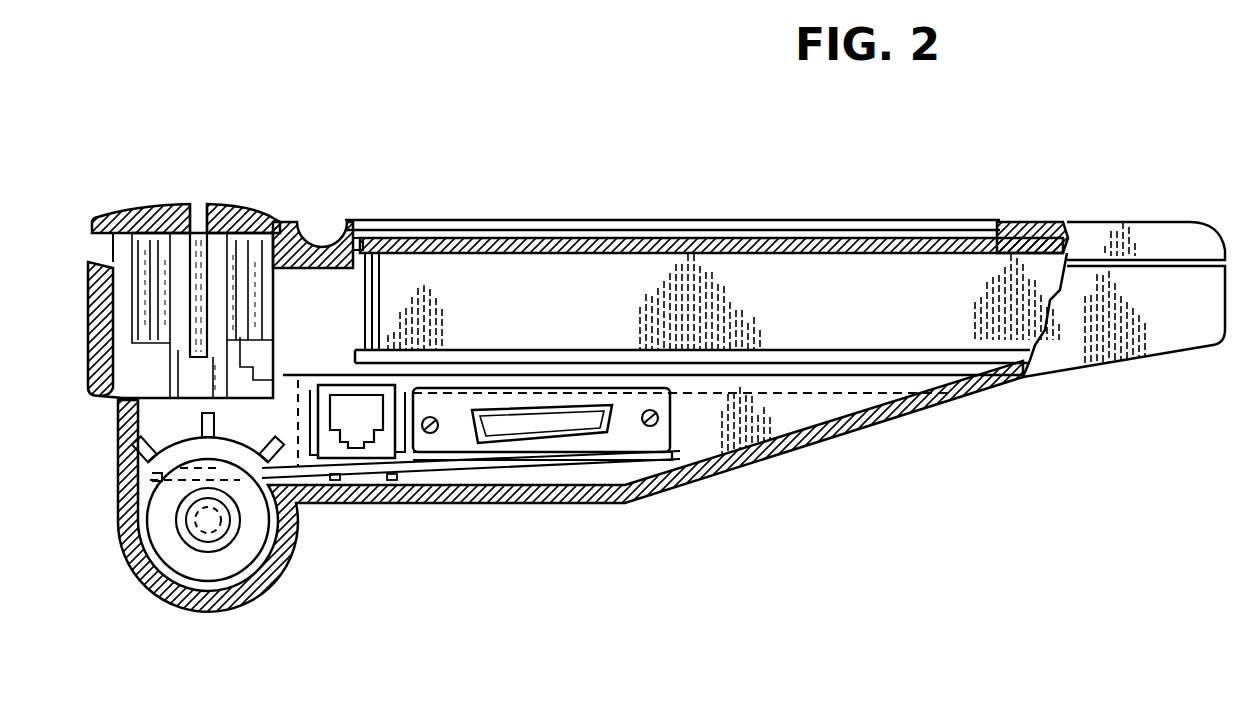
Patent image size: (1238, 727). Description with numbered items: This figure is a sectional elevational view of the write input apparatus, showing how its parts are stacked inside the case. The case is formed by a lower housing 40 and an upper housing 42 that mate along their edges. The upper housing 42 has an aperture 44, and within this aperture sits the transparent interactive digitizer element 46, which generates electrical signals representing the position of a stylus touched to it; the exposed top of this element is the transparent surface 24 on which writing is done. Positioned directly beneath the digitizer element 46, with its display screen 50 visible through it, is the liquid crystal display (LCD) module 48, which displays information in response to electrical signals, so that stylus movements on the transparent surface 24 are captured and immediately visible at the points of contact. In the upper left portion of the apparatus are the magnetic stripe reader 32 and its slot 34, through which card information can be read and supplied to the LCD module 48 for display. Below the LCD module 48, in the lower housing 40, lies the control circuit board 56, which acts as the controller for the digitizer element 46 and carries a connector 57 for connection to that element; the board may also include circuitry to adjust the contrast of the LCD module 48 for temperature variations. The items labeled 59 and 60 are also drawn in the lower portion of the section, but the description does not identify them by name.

The transparent surface 24 is at (372, 220).
The magnetic stripe reader 32 is at (168, 317).
The slot 34 is at (202, 208).
The lower housing 40 is at (1073, 384).
The upper housing 42 is at (1153, 222).
The aperture 44 is at (1005, 232).
The transparent interactive digitizer element 46 is at (645, 243).
The liquid crystal display (LCD) module 48 is at (462, 273).
The display screen 50 is at (533, 260).
The control circuit board 56 is at (513, 462).
The connector 57 is at (348, 398).
The connector plate 59 is at (543, 397).
The cylindrical housing 60 is at (188, 606).